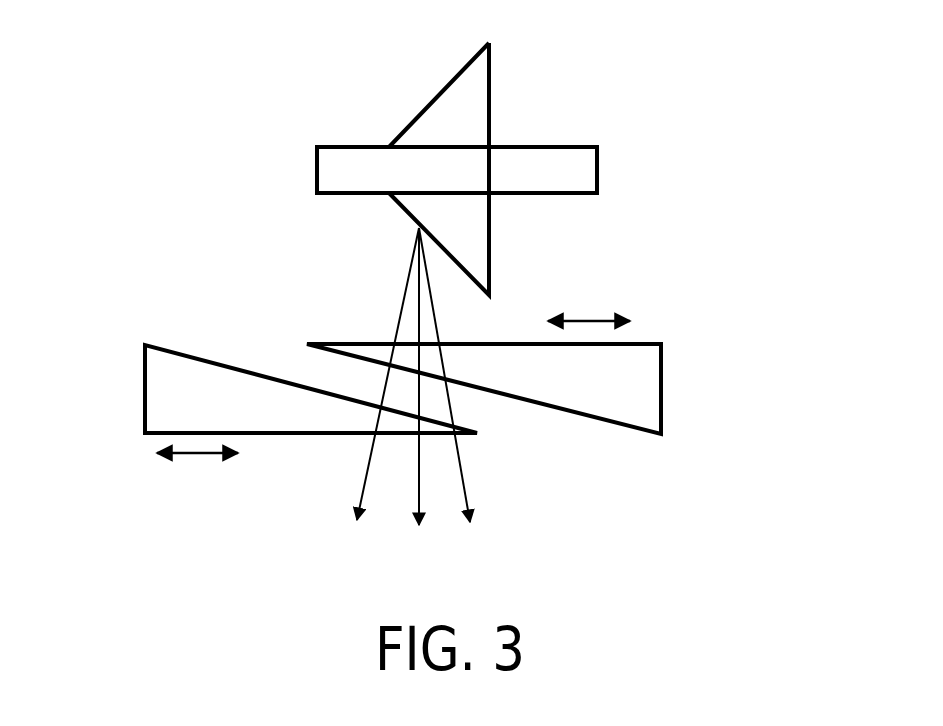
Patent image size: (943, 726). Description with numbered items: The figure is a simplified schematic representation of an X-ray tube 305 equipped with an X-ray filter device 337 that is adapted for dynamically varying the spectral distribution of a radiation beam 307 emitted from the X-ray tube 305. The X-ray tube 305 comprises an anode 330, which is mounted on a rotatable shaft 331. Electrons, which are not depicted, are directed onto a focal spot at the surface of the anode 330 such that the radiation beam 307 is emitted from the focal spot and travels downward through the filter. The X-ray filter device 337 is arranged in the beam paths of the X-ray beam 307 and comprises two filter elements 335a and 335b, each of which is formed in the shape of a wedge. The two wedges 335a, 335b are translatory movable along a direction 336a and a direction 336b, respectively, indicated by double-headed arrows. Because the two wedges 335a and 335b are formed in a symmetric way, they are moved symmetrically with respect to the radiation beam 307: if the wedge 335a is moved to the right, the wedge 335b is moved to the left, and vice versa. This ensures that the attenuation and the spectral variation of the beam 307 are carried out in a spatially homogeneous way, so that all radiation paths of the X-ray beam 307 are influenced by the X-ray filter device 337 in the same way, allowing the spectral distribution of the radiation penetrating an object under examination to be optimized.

The X-ray tube 305 is at (655, 27).
The anode 330 is at (490, 88).
The rotatable shaft 331 is at (572, 146).
The radiation beam 307 is at (405, 287).
The direction 336a is at (198, 453).
The direction 336b is at (590, 321).
The X-ray filter device 337 is at (797, 335).
The filter element 335a is at (147, 395).
The filter element 335b is at (661, 392).